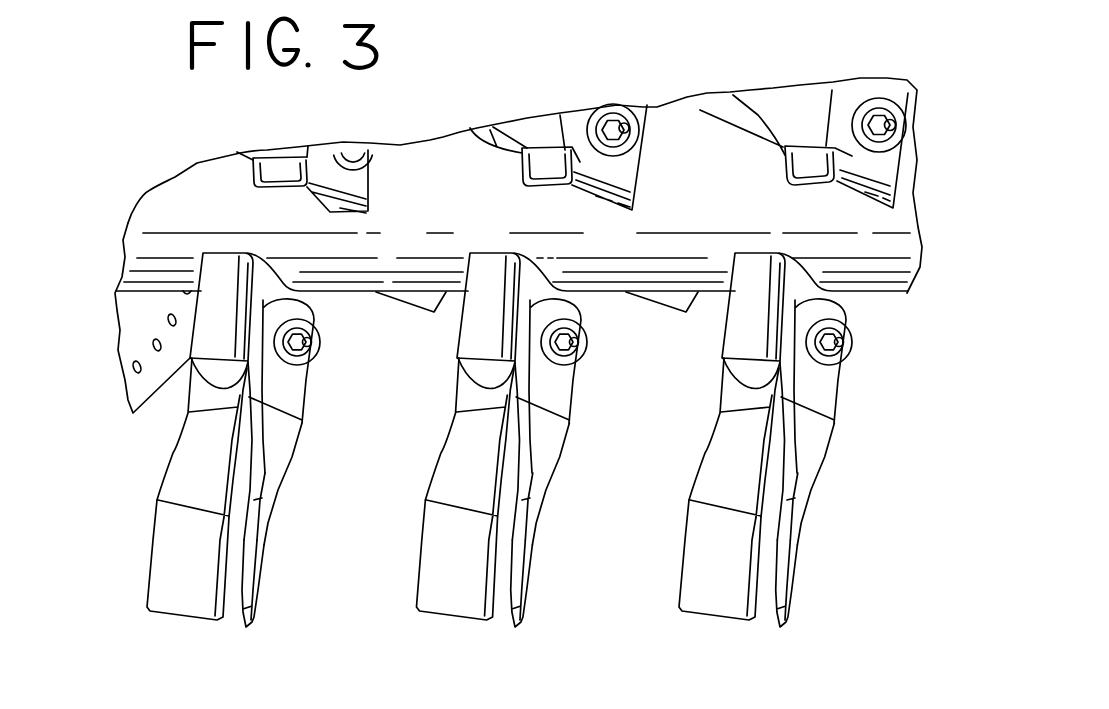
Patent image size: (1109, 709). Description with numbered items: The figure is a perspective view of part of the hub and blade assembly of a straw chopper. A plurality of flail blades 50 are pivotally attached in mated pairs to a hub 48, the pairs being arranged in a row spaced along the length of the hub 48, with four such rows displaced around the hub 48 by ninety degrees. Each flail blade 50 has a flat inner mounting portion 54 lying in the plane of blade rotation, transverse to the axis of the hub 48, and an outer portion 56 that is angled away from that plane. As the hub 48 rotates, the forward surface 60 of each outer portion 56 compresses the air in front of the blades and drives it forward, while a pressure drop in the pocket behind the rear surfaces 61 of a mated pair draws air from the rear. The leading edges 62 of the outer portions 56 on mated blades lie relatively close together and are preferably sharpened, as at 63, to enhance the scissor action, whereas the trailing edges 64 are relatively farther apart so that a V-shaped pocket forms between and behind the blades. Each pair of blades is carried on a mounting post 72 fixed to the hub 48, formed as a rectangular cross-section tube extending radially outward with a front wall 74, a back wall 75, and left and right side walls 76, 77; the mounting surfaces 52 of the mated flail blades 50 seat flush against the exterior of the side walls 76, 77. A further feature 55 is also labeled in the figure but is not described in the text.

The hub 48 is at (417, 253).
The flail blade 50 is at (503, 492).
The mounting surface 52 is at (212, 397).
The inner mounting portion 54 is at (293, 401).
The mounting plate 55 is at (840, 306).
The outer portion 56 is at (258, 558).
The forward surface 60 is at (742, 104).
The rear surface 61 is at (302, 549).
The leading edge 62 is at (708, 113).
The sharpened portion of leading edge 63 is at (507, 543).
The trailing edge 64 is at (148, 570).
The mounting post 72 is at (482, 287).
The front wall 74 is at (585, 197).
The back wall 75 is at (463, 297).
The left side wall 76 is at (465, 318).
The right side wall 77 is at (575, 303).